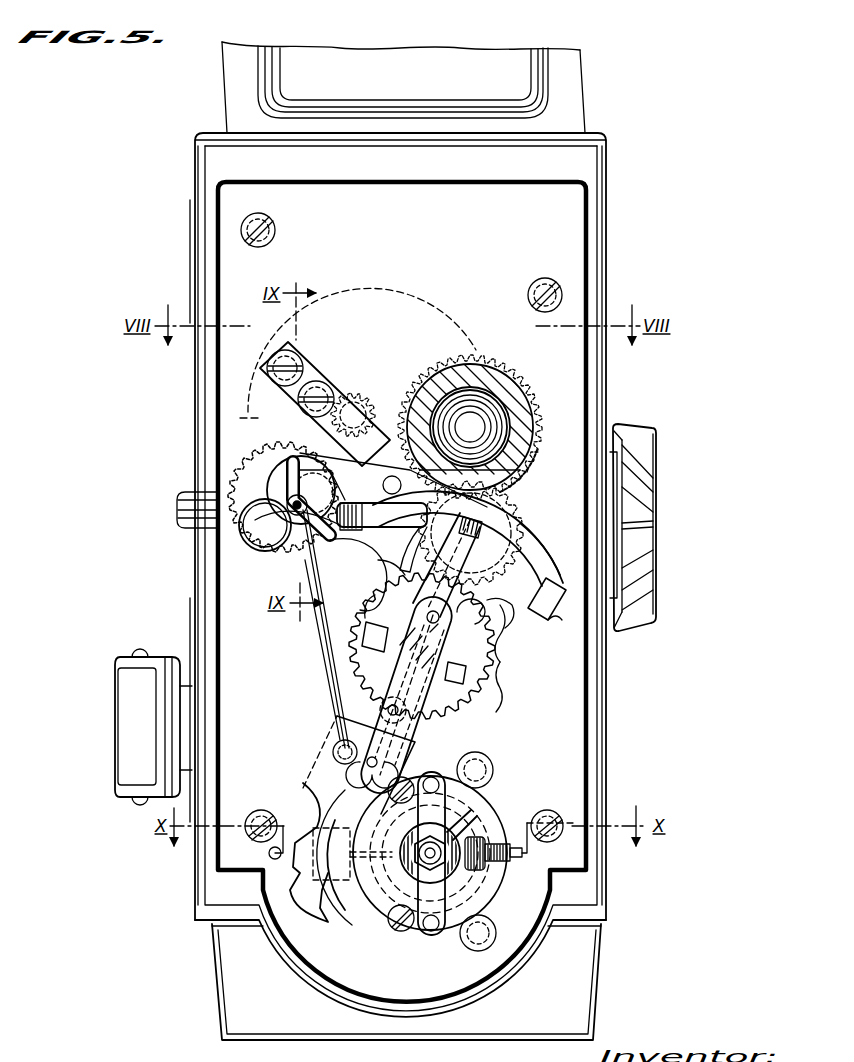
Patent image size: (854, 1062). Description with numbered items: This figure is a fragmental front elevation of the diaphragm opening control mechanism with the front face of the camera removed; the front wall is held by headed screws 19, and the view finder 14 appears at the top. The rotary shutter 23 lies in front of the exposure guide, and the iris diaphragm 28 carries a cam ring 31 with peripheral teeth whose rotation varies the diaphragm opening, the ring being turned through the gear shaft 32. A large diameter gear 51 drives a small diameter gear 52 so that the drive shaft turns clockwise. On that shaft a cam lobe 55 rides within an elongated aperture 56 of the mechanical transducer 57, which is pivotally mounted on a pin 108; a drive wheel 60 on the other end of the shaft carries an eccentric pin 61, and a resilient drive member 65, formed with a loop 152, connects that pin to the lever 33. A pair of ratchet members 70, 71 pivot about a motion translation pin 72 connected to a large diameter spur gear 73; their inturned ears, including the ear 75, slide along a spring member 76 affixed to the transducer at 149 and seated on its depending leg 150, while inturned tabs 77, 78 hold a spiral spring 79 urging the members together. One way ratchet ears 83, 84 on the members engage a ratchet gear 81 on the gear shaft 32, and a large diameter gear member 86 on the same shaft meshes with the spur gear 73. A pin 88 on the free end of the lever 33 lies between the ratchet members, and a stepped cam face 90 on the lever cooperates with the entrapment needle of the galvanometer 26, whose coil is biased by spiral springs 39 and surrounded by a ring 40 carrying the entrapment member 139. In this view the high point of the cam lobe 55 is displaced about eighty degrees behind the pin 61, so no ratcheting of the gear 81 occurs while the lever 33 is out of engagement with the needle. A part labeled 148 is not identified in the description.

The view finder 14 is at (448, 82).
The rotary shutter 23 is at (414, 303).
The iris diaphragm 28 is at (507, 353).
The cam ring 31 is at (522, 420).
The large diameter gear 51 is at (275, 392).
The small diameter gear 52 is at (367, 395).
The elongated aperture 56 is at (292, 460).
The drive wheel 60 is at (305, 462).
The pin 108 is at (393, 480).
The cam lobe 55 is at (350, 505).
The attachment point of spring wire member 149 is at (382, 515).
The ratchet gear 81 is at (517, 481).
The gear shaft 32 is at (512, 505).
The inturned ear 75 is at (527, 520).
The one way ratchet ear 84 is at (522, 545).
The one way ratchet ear 83 is at (402, 548).
The mechanical transducer 57 is at (345, 548).
The cam projection 148 is at (385, 563).
The loop 152 is at (260, 552).
The pin 61 is at (302, 548).
The inturned tab 77 is at (366, 600).
The ratchet member 70 is at (428, 604).
The spiral spring 79 is at (427, 616).
The ratchet member 71 is at (474, 590).
The pin 88 is at (471, 612).
The large diameter gear member 86 is at (503, 655).
The depending leg 150 is at (538, 618).
The spring member 76 is at (556, 614).
The large diameter spur gear 73 is at (500, 662).
The inturned tab 78 is at (482, 680).
The resilient drive member 65 is at (330, 653).
The motion translation pin 72 is at (405, 725).
The lever 33 is at (305, 768).
The headed screws 19 is at (256, 810).
The spiral springs 39 is at (440, 818).
The galvanometer 26 is at (504, 897).
The stepped cam face 90 is at (343, 920).
The entrapment member 139 is at (372, 930).
The ring 40 is at (452, 938).